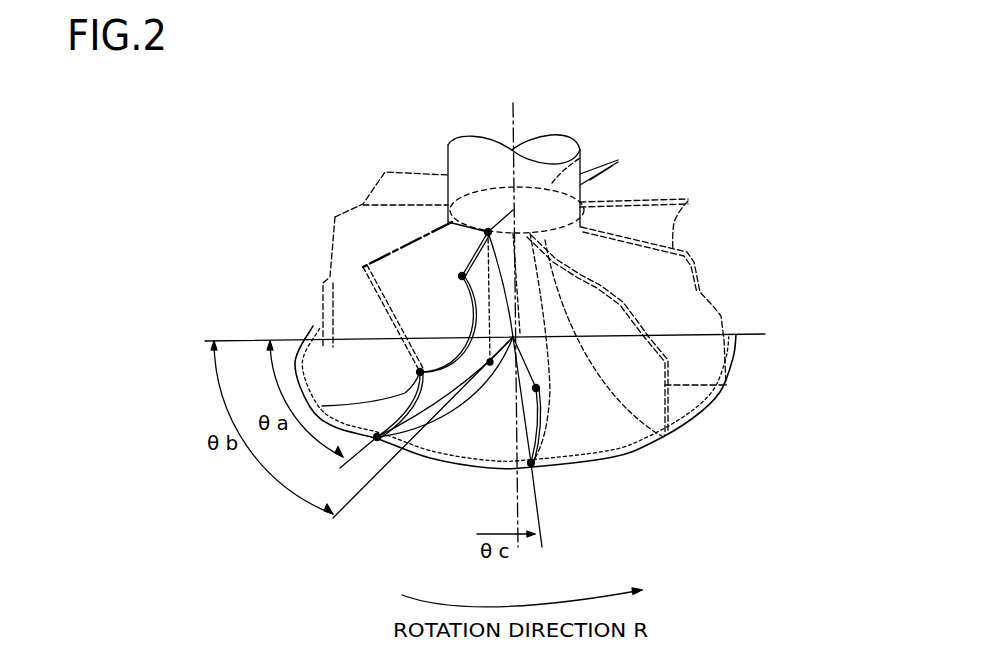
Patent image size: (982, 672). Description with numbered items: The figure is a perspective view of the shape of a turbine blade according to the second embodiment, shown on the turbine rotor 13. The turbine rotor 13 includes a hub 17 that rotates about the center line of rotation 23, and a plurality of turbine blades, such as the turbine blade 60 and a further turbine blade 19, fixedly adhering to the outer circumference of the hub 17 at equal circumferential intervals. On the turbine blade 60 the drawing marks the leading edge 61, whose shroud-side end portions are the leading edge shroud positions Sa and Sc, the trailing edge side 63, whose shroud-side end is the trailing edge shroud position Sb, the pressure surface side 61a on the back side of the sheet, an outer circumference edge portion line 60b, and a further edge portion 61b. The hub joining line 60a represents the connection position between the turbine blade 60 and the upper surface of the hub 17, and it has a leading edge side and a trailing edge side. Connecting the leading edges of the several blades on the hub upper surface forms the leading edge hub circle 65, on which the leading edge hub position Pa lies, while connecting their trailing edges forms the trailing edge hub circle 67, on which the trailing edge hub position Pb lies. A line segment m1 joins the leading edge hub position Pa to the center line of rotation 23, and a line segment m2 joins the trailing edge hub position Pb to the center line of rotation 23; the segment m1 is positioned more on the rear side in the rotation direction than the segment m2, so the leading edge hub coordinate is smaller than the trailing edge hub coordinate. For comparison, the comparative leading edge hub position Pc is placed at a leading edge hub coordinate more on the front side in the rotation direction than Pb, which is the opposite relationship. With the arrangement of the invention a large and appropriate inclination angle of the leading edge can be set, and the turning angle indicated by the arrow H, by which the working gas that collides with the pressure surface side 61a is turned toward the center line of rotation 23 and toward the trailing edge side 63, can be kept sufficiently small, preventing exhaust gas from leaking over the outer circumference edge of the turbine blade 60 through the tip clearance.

The turbine rotor 13 is at (750, 352).
The hub 17 is at (603, 438).
The turbine blade 19 is at (673, 221).
The center line of rotation 23 is at (517, 112).
The turbine blade 60 is at (397, 338).
The hub joining line 60a is at (433, 424).
The outer circumference edge portion line 60b is at (467, 318).
The leading edge 61 is at (397, 406).
The pressure surface side 61a is at (390, 426).
The hub-side edge portion 61b is at (408, 420).
The trailing edge 63 is at (468, 254).
The leading edge hub circle 65 is at (705, 413).
The trailing edge hub circle 67 is at (587, 170).
The leading edge hub position Pa is at (376, 440).
The trailing edge hub position Pb is at (488, 232).
The leading edge hub position Pc is at (535, 468).
The leading edge shroud position Sa is at (414, 369).
The trailing edge shroud position Sb is at (458, 275).
The leading edge shroud position Sc is at (541, 394).
The arrow H is at (481, 344).
The line segment m1 is at (447, 402).
The line segment m2 is at (503, 213).